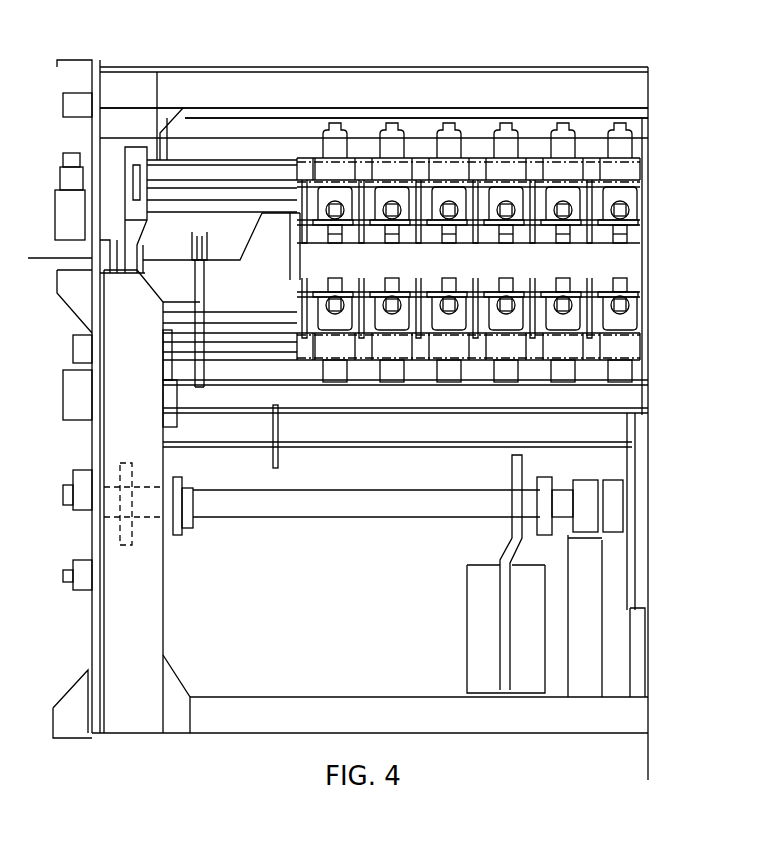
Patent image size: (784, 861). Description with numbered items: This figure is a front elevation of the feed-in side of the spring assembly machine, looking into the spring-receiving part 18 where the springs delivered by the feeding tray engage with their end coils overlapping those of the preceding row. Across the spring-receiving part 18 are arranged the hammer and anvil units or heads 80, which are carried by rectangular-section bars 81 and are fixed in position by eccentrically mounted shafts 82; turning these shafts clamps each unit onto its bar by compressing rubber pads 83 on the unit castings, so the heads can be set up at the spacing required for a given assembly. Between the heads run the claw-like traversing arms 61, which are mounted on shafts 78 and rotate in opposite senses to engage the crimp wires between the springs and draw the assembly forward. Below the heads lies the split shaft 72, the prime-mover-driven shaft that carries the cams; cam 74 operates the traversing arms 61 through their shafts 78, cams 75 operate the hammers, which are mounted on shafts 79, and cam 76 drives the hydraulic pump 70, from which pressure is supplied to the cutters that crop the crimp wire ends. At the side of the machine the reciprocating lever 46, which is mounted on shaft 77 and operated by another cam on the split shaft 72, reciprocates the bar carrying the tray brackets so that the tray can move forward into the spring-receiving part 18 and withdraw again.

The spring-receiving part 18 is at (468, 216).
The reciprocating lever 46 is at (200, 311).
The claw-like traversing arms 61 is at (419, 279).
The hydraulic pump 70 is at (503, 610).
The split shaft 72 is at (383, 503).
The cam 74 is at (183, 483).
The cams 75 is at (127, 545).
The cam 76 is at (521, 465).
The shaft 77 is at (290, 402).
The shafts 78 is at (189, 170).
The shafts 79 is at (273, 204).
The hammer and anvil units 80 is at (446, 193).
The rectangular-section bars 81 is at (266, 150).
The eccentrically mounted shafts 82 is at (222, 112).
The rubber pads 83 is at (563, 123).